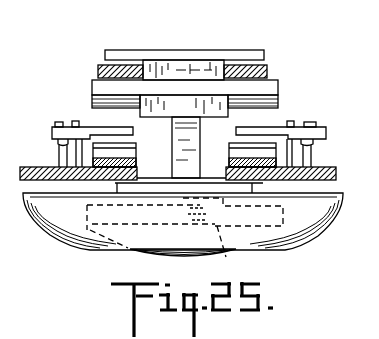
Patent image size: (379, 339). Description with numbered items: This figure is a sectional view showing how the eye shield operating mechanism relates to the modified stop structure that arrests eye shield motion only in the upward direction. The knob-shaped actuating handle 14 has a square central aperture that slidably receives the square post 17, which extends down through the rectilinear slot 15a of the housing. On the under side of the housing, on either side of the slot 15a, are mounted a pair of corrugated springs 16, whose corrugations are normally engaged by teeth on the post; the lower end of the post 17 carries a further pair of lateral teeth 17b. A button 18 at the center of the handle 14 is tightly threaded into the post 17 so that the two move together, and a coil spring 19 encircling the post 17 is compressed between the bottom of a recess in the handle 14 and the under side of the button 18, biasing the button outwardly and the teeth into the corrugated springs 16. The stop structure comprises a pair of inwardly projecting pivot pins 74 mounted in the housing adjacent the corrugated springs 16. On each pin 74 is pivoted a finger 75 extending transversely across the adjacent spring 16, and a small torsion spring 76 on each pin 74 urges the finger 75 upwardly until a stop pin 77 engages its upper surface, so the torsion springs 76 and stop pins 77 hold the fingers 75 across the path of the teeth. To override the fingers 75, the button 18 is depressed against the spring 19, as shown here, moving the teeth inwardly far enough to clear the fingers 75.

The actuating handle 14 is at (57, 228).
The rectilinear slot 15a is at (226, 182).
The corrugated springs 16 is at (135, 150).
The square post 17 is at (203, 138).
The lateral teeth 17b is at (130, 50).
The button 18 is at (151, 257).
The coil spring 19 is at (228, 252).
The pivot pins 74 is at (58, 158).
The finger 75 is at (50, 131).
The torsion spring 76 is at (56, 141).
The stop pin 77 is at (77, 121).